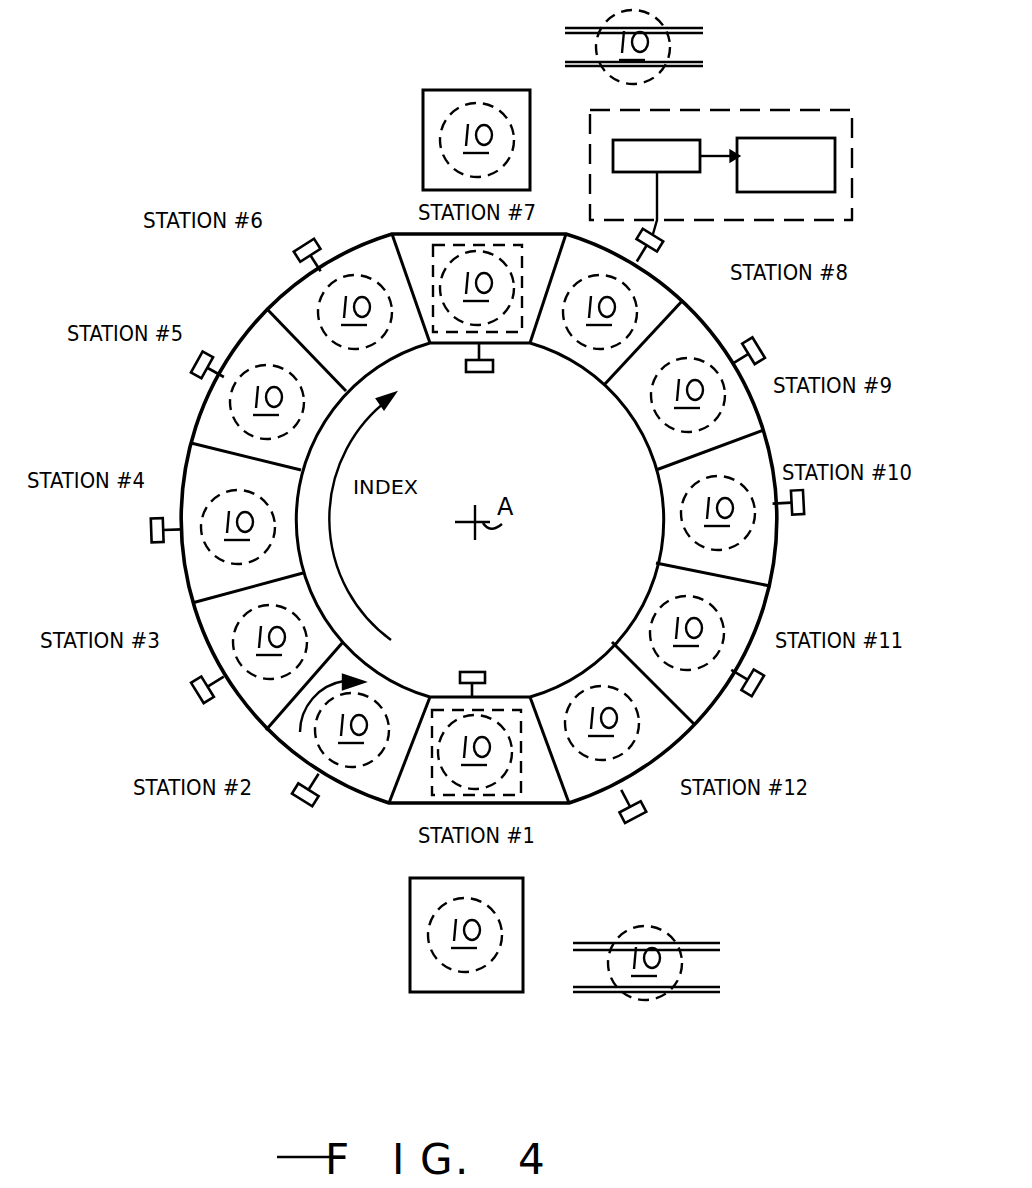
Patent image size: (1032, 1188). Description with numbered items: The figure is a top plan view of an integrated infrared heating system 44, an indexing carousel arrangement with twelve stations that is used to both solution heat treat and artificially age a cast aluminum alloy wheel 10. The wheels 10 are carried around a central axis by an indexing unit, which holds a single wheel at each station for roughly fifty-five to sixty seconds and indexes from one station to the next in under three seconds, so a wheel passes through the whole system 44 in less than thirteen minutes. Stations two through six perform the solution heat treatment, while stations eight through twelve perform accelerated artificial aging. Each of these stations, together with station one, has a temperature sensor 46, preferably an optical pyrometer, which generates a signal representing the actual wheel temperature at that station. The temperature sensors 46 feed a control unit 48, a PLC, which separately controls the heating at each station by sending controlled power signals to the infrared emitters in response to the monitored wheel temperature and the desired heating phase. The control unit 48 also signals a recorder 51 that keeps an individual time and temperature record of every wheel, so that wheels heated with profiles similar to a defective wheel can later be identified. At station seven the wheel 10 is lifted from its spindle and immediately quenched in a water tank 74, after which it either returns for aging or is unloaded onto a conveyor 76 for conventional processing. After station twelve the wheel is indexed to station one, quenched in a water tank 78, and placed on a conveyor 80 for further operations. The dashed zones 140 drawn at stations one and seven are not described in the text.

The cast aluminum alloy wheel 10 is at (478, 505).
The integrated infrared heating system 44 is at (260, 166).
The temperature sensor 46 is at (312, 240).
The control unit (PLC) 48 is at (640, 140).
The recorder (REC) 51 is at (769, 138).
The water tank 74 is at (423, 100).
The conveyor 76 is at (690, 26).
The water tank 78 is at (410, 950).
The conveyor 80 is at (697, 943).
The inspection zone 140 is at (522, 252).